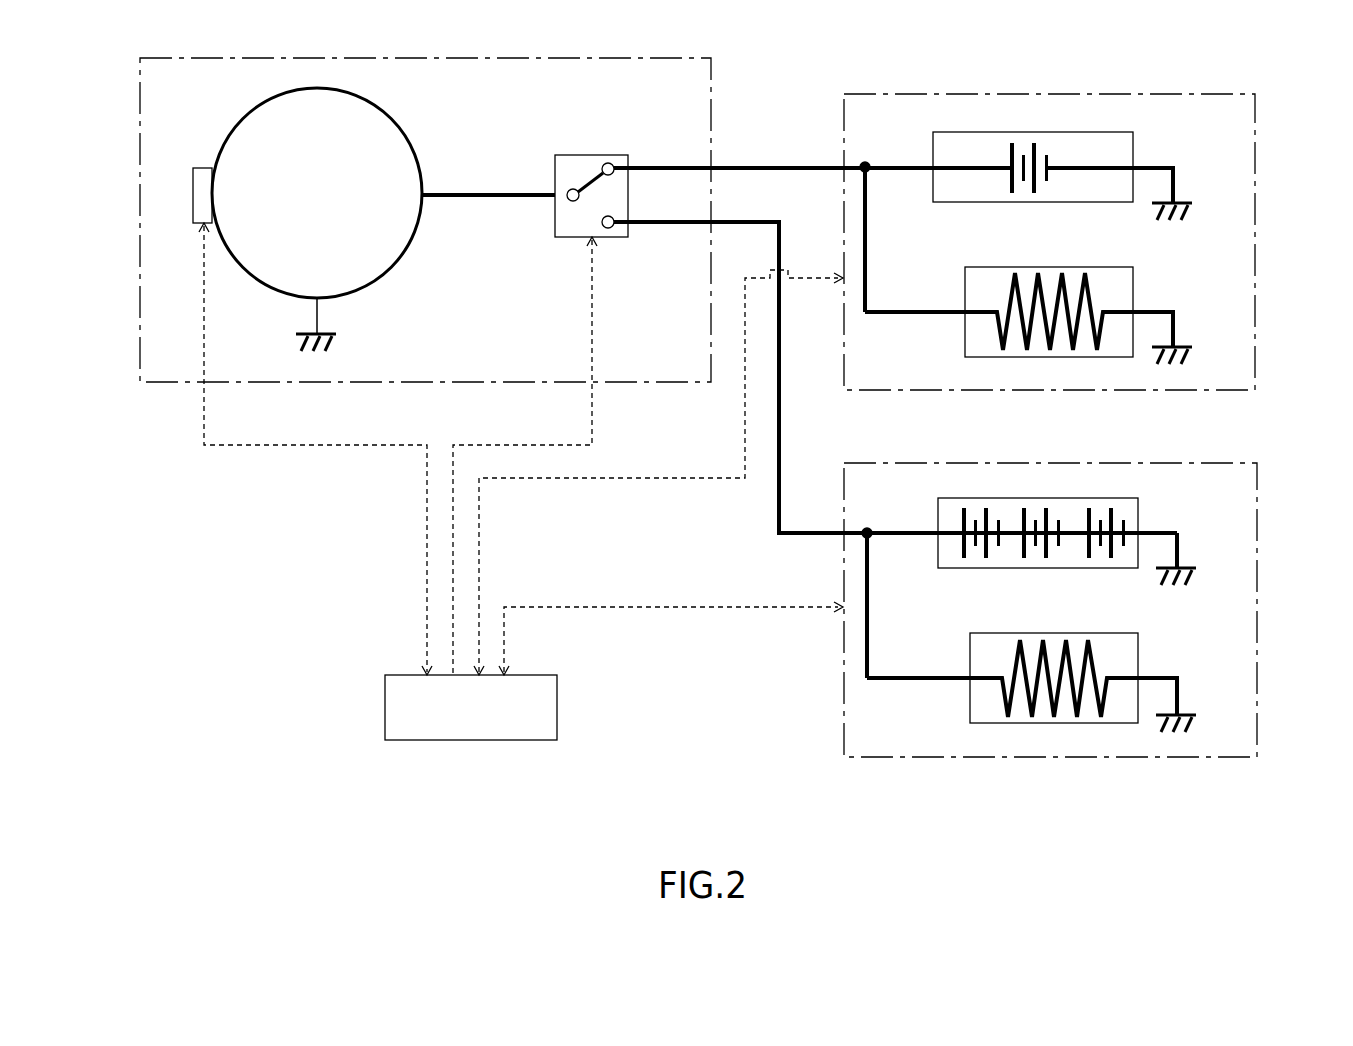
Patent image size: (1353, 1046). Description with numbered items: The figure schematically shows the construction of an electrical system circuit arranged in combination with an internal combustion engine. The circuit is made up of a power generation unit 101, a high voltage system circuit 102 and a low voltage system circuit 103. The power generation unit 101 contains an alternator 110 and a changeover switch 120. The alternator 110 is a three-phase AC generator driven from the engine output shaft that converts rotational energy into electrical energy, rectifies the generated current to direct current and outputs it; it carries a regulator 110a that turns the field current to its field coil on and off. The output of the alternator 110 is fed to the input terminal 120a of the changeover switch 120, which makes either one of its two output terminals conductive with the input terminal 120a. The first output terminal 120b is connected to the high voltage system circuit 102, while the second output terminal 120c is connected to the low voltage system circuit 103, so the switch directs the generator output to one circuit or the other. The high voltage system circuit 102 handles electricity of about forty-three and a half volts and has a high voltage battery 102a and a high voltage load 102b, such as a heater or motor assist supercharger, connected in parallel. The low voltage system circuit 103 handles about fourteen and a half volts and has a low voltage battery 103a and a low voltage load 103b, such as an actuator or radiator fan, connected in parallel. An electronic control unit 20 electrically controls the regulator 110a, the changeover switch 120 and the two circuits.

The electronic control unit (ECU) 20 is at (557, 708).
The power generation unit 101 is at (140, 310).
The alternator 110 is at (397, 262).
The regulator 110a is at (198, 168).
The changeover switch 120 is at (587, 161).
The input terminal 120a is at (568, 190).
The first output terminal 120b is at (612, 216).
The second output terminal 120c is at (612, 163).
The high voltage system circuit 102 is at (1093, 610).
The high voltage battery 102a is at (1138, 515).
The high voltage load 102b is at (1138, 655).
The low voltage system circuit 103 is at (1093, 242).
The low voltage battery 103a is at (1133, 147).
The low voltage load 103b is at (1133, 287).